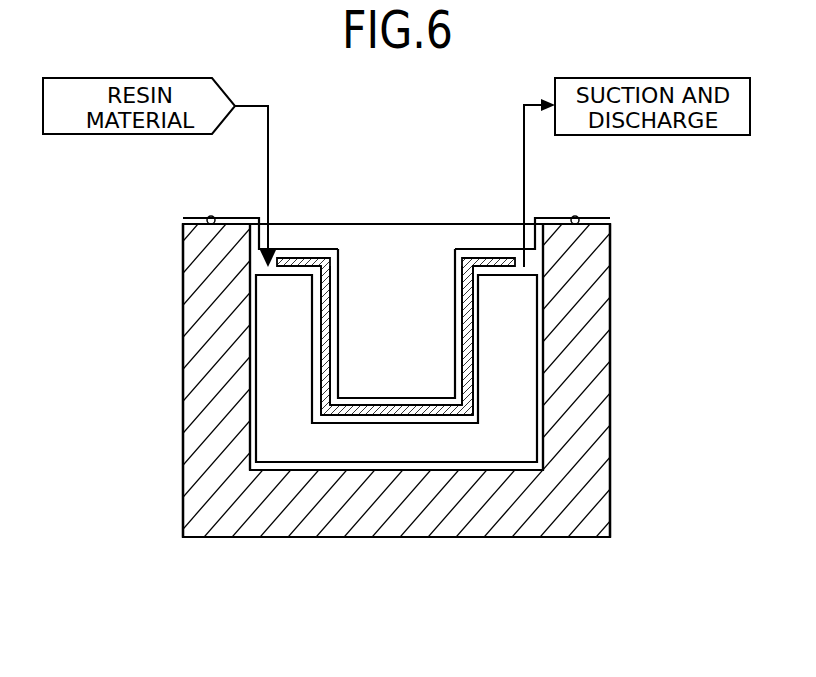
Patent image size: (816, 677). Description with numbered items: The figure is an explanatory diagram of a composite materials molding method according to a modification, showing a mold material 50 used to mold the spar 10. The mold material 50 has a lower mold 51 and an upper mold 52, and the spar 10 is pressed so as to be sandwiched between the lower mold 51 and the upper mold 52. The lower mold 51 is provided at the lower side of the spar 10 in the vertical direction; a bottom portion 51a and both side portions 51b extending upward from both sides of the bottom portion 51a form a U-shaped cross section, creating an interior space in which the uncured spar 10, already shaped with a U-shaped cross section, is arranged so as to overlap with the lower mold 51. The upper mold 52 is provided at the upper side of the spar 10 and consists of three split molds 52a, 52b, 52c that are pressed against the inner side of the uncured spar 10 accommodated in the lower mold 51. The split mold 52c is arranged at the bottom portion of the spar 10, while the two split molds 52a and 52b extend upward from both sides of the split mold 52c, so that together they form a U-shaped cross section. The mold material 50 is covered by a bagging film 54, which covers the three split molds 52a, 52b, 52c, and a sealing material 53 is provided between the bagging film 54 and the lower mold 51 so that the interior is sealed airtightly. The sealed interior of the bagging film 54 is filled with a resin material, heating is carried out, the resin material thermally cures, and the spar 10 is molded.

The spar 10 is at (513, 420).
The mold material 50 is at (255, 566).
The lower mold 51 is at (329, 544).
The bottom portion 51a is at (478, 520).
The side portions 51b is at (200, 362).
The upper mold 52 is at (340, 248).
The split mold 52a is at (330, 312).
The split mold 52b is at (453, 285).
The split mold 52c is at (392, 404).
The sealing material 53 is at (211, 215).
The bagging film 54 is at (303, 248).